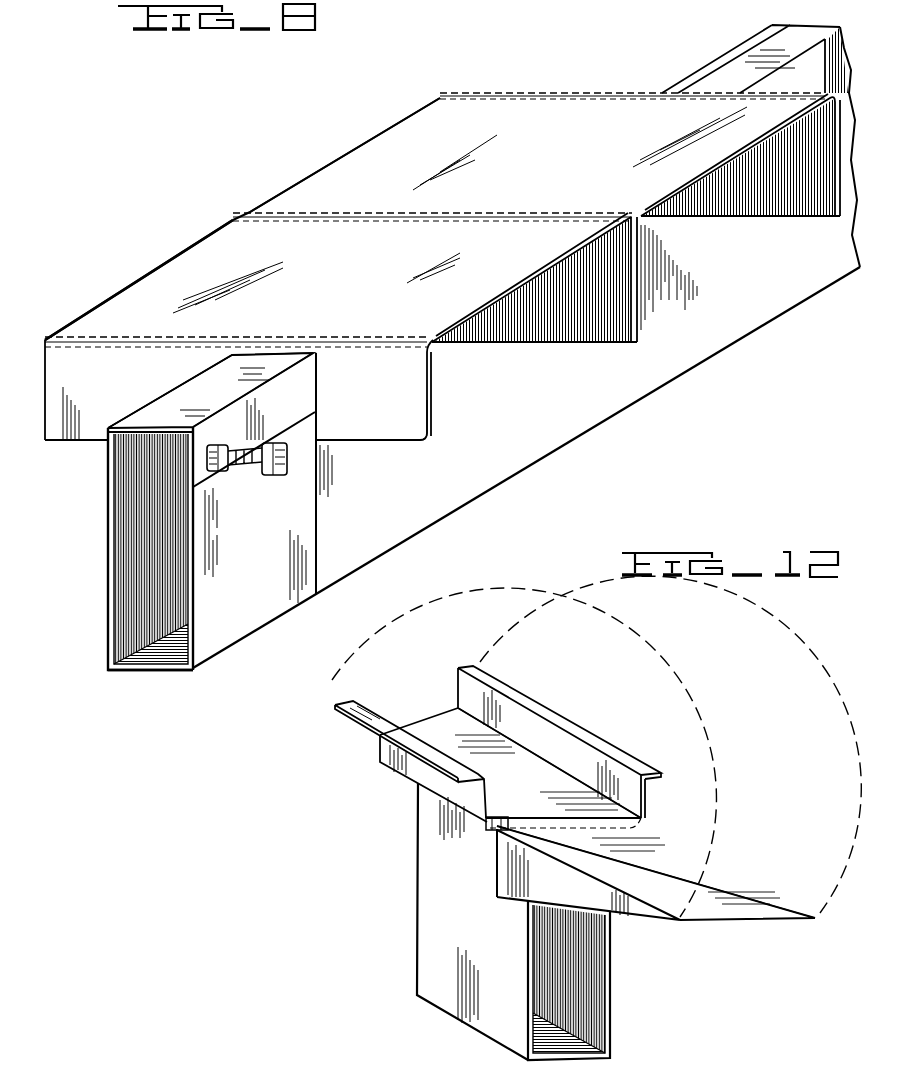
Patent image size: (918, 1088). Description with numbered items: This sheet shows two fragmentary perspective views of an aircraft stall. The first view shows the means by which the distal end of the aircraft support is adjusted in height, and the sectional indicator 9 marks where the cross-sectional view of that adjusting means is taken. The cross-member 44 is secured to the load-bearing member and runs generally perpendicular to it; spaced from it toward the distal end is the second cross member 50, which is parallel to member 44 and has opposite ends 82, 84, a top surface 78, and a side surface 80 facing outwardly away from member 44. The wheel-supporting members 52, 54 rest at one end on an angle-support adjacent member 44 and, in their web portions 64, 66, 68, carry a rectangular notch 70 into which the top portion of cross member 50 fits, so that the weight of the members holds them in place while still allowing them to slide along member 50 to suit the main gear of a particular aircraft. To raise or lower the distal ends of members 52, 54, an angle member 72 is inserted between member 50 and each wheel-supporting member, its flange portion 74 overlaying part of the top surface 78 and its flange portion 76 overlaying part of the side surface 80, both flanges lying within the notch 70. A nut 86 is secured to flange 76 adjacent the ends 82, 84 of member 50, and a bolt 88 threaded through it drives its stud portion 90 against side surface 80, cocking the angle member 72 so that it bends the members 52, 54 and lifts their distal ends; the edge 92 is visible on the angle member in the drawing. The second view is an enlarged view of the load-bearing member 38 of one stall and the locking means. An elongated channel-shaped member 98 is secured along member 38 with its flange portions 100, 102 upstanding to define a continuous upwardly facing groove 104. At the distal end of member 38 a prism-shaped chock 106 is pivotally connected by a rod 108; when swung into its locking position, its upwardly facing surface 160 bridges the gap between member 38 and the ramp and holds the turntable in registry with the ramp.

In FIG. 8, the cross-member 44 is at (710, 343).
In FIG. 8, the wheel-supporting member 52 is at (503, 230).
In FIG. 8, the wheel-supporting member 54 is at (242, 219).
In FIG. 8, the web portion 66 is at (603, 330).
In FIG. 8, the web portion 68 is at (808, 197).
In FIG. 8, the rectangular notch 70 is at (314, 403).
In FIG. 8, the angle member 72 is at (240, 363).
In FIG. 8, the flange portion 74 is at (272, 360).
In FIG. 8, the flange portion 76 is at (308, 375).
In FIG. 8, the top surface 78 is at (217, 367).
In FIG. 8, the bracket front edge 92 is at (300, 362).
In FIG. 8, the web portion 64 is at (423, 437).
In FIG. 8, the nut 86 is at (217, 447).
In FIG. 8, the bolt 88 is at (277, 470).
In FIG. 8, the stud portion 90 is at (243, 456).
In FIG. 8, the side surface 80 is at (240, 628).
In FIG. 8, the end 82 is at (110, 656).
In FIG. 8, the end 84 is at (151, 644).
In FIG. 8, the second cross member 50 is at (198, 672).
In FIG. 8, the section line 9- 9 is at (61, 471).
In FIG. 12, the channel-shaped member 98 is at (515, 697).
In FIG. 12, the flange portion 100 is at (648, 793).
In FIG. 12, the flange portion 102 is at (445, 793).
In FIG. 12, the groove 104 is at (537, 770).
In FIG. 12, the chock or abutment member 106 is at (748, 877).
In FIG. 12, the rod 108 is at (492, 831).
In FIG. 12, the upwardly facing surface 160 is at (677, 855).
In FIG. 12, the load-bearing member 38 is at (448, 995).